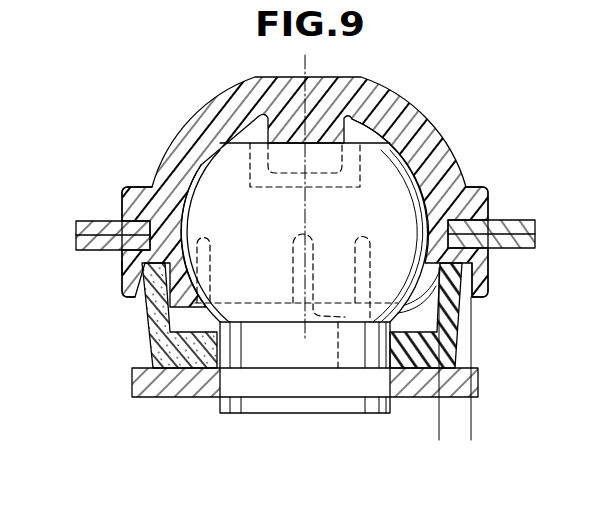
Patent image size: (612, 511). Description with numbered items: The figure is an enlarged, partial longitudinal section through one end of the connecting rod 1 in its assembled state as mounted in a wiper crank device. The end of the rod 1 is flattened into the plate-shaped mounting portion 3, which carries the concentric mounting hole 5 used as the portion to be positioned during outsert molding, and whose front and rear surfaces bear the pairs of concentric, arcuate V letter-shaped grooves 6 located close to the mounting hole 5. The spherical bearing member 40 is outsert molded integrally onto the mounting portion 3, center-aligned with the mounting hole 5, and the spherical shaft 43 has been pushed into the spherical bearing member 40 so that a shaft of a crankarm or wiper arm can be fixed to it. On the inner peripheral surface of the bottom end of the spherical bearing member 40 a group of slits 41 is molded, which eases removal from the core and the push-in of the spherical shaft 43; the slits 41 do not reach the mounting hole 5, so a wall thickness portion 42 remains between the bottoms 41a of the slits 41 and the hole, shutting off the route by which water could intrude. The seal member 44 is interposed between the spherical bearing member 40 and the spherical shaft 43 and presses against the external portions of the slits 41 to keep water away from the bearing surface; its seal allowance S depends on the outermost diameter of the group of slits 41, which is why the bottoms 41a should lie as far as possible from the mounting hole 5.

The rod 1 is at (75, 258).
The mounting portion 3 is at (78, 216).
The mounting hole 5 is at (481, 214).
The V letter-shaped grooves 6 is at (123, 268).
The spherical bearing member 40 is at (421, 113).
The slits 41 is at (360, 318).
The bottoms of the slits 41a is at (480, 268).
The wall thickness portion 42 is at (167, 222).
The spherical shaft 43 is at (441, 188).
The seal member 44 is at (155, 346).
The seal allowance S is at (471, 437).